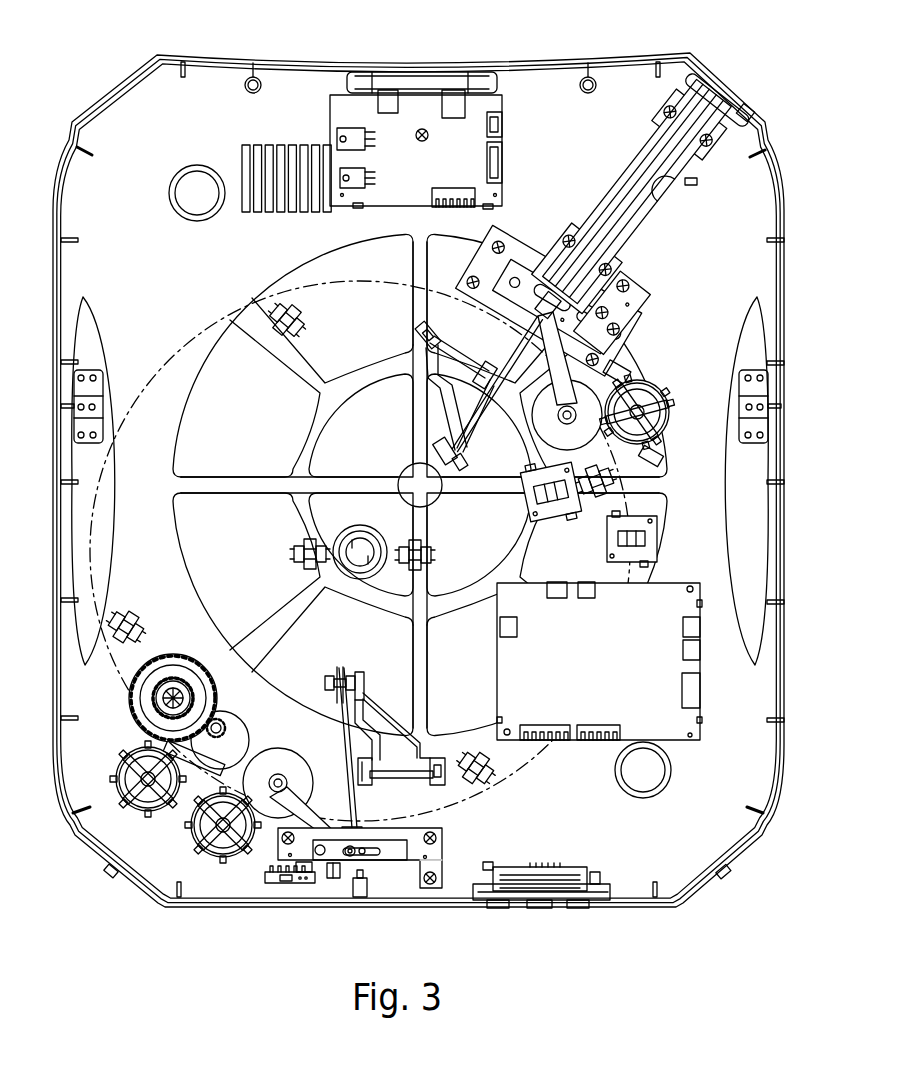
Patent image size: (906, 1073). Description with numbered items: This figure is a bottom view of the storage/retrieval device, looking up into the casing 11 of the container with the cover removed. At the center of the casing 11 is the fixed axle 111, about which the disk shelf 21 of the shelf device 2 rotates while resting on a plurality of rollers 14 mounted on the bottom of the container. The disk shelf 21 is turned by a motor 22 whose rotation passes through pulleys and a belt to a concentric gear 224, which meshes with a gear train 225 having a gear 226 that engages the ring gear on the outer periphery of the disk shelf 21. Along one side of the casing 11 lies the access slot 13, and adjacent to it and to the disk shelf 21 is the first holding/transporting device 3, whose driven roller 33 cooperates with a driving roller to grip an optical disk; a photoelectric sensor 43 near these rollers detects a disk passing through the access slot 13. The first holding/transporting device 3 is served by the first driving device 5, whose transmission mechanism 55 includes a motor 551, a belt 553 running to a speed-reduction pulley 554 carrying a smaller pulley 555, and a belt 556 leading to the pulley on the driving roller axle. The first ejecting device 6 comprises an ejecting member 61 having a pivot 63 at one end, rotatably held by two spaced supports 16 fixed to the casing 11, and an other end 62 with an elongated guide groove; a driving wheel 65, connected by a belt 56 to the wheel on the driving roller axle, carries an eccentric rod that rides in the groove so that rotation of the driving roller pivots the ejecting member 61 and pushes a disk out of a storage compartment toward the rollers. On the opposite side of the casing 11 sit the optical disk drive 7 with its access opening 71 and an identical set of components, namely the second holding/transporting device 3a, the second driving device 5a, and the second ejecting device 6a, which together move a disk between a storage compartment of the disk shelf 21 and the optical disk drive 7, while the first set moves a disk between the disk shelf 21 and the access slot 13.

The casing 11 is at (537, 92).
The disk shelf 21 is at (165, 355).
The axle 111 is at (327, 537).
The optical disk drive 7 is at (640, 187).
The access opening 71 is at (557, 288).
The second holding/transporting device 3a is at (632, 292).
The second driving device 5a is at (634, 354).
The belt 556 is at (540, 452).
The driven roller 33 is at (470, 428).
The ejecting member 61 is at (440, 388).
The second ejecting device 6a is at (420, 358).
The first ejecting device 6 is at (420, 730).
The belt 56 is at (528, 352).
The supports 16 is at (417, 342).
The pivot 63 is at (420, 328).
The other end 62 is at (430, 456).
The driving wheel 65 is at (452, 468).
The concentric gear 224 is at (347, 700).
The rollers 14 is at (273, 327).
The speed-reduction pulley 554 is at (618, 458).
The motor 551 is at (662, 397).
The pulley 555 is at (650, 456).
The gear train 225 is at (180, 655).
The gear 226 is at (210, 718).
The motor 22 is at (122, 775).
The shelf device 2 is at (128, 738).
The transmission mechanism 55 is at (178, 838).
The first driving device 5 is at (327, 795).
The first holding/transporting device 3 is at (392, 868).
The belt 553 is at (265, 885).
The photoelectric sensor 43 is at (332, 882).
The access slot 13 is at (365, 897).